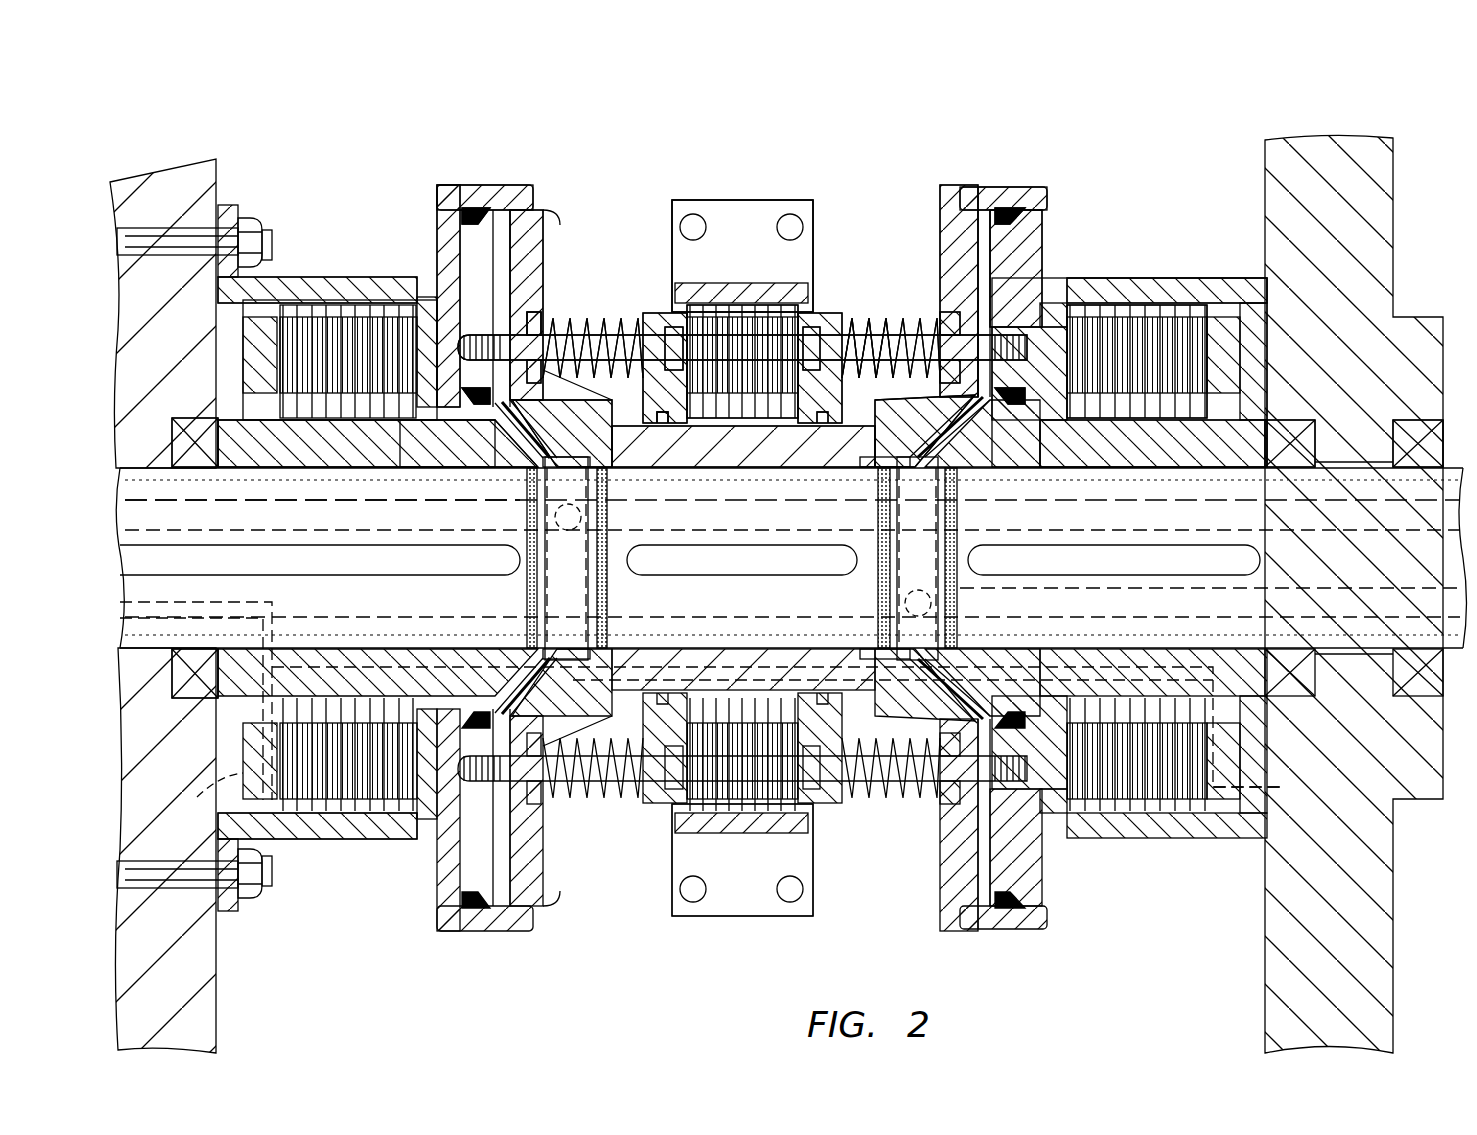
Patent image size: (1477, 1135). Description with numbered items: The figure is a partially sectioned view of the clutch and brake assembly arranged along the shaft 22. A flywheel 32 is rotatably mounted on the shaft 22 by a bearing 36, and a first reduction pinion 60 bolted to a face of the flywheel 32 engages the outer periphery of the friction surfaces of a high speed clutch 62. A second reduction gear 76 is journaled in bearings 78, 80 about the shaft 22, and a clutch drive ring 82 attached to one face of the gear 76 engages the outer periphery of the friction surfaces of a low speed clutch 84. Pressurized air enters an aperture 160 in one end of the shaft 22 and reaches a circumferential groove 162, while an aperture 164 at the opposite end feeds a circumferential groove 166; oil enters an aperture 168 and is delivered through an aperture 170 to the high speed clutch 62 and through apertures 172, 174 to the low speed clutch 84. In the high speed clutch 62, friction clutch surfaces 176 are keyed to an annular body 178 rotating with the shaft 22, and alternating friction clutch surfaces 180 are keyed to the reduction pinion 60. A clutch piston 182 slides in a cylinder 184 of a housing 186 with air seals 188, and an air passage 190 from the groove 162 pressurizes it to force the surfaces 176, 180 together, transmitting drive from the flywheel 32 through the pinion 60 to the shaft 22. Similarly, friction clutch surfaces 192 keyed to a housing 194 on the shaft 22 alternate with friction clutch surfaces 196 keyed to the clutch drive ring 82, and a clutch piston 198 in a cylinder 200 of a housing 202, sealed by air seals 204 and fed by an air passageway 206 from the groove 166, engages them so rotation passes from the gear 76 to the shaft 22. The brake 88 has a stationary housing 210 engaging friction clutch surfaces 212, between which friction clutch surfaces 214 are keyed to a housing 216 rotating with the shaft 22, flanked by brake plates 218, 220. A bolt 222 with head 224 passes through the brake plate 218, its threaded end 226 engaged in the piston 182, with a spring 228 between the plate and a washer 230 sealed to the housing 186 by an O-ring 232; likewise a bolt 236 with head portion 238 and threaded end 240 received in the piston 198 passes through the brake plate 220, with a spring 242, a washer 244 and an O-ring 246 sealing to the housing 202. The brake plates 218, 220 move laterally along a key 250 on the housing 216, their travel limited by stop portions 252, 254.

The shaft 22 is at (756, 532).
The flywheel 32 is at (180, 347).
The bearing 36 is at (196, 437).
The first reduction pinion 60 is at (343, 288).
The high speed clutch 62 is at (318, 247).
The second reduction gear 76 is at (1355, 250).
The bearing 78 is at (1295, 437).
The bearing 80 is at (1422, 437).
The clutch drive ring 82 is at (1170, 288).
The low speed clutch 84 is at (1148, 230).
The brake 88 is at (748, 195).
The aperture 160 is at (147, 518).
The circumferential groove 162 is at (565, 570).
The aperture 164 is at (1378, 588).
The circumferential groove 166 is at (920, 538).
The aperture 168 is at (125, 602).
The aperture 170 is at (209, 793).
The aperture 172 is at (790, 690).
The aperture 174 is at (1283, 795).
The friction clutch surfaces 176 is at (355, 440).
The annular body 178 is at (418, 445).
The friction clutch surfaces 180 is at (355, 315).
The clutch piston 182 is at (447, 243).
The cylinder 184 is at (515, 212).
The housing 186 is at (538, 270).
The air seals 188 is at (478, 206).
The air passage 190 is at (512, 440).
The friction clutch surfaces 192 is at (1105, 410).
The housing 194 is at (1205, 460).
The friction clutch surfaces 196 is at (1115, 305).
The clutch piston 198 is at (1030, 250).
The cylinder 200 is at (960, 197).
The housing 202 is at (955, 245).
The air seals 204 is at (1008, 208).
The air passageway 206 is at (985, 450).
The stationary housing 210 is at (793, 256).
The friction clutch surfaces 212 is at (758, 305).
The friction clutch surfaces 214 is at (745, 412).
The housing 216 is at (800, 465).
The brake plate 218 is at (650, 397).
The brake plate 220 is at (840, 396).
The bolt 222 is at (615, 320).
The head of the bolt 224 is at (668, 325).
The threaded end 226 is at (535, 312).
The spring 228 is at (612, 337).
The washer 230 is at (530, 360).
The packing or O-ring 232 is at (532, 314).
The bolt 236 is at (870, 332).
The head portion 238 is at (815, 327).
The threaded end 240 is at (1010, 312).
The spring 242 is at (892, 326).
The washer 244 is at (946, 335).
The packing or O-ring 246 is at (950, 318).
The key 250 is at (665, 428).
The stop portion 252 is at (652, 428).
The stop portion 254 is at (822, 428).